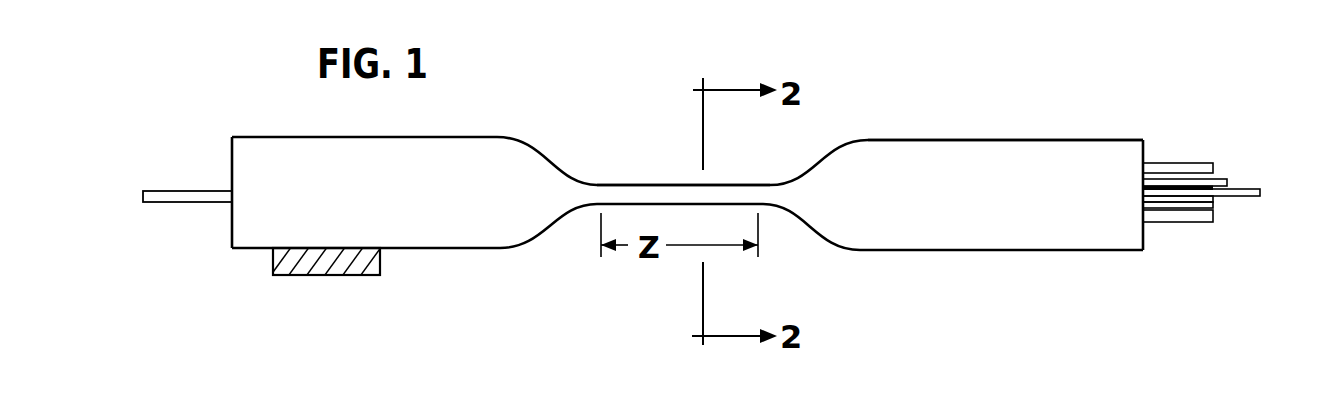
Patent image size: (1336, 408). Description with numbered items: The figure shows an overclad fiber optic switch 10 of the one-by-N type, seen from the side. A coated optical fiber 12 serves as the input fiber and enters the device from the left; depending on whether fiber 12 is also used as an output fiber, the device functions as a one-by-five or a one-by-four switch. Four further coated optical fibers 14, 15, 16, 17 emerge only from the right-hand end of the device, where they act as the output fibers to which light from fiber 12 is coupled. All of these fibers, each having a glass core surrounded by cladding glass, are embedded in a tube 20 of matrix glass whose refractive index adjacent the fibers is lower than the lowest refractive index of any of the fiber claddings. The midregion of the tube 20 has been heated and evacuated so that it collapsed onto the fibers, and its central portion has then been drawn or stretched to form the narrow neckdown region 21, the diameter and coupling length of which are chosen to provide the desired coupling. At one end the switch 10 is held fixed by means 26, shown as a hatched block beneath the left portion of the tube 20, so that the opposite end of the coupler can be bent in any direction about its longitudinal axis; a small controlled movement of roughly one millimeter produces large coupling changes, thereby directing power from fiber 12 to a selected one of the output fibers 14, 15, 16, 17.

The overclad fiber optic switch 10 is at (1036, 292).
The coated optical fiber 12 is at (162, 190).
The coated optical fiber 14 is at (1177, 163).
The coated optical fiber 15 is at (1208, 198).
The coated optical fiber 16 is at (1177, 222).
The coated optical fiber 17 is at (1223, 182).
The tube 20 is at (998, 140).
The neckdown region 21 is at (665, 185).
The fixing means 26 is at (292, 277).